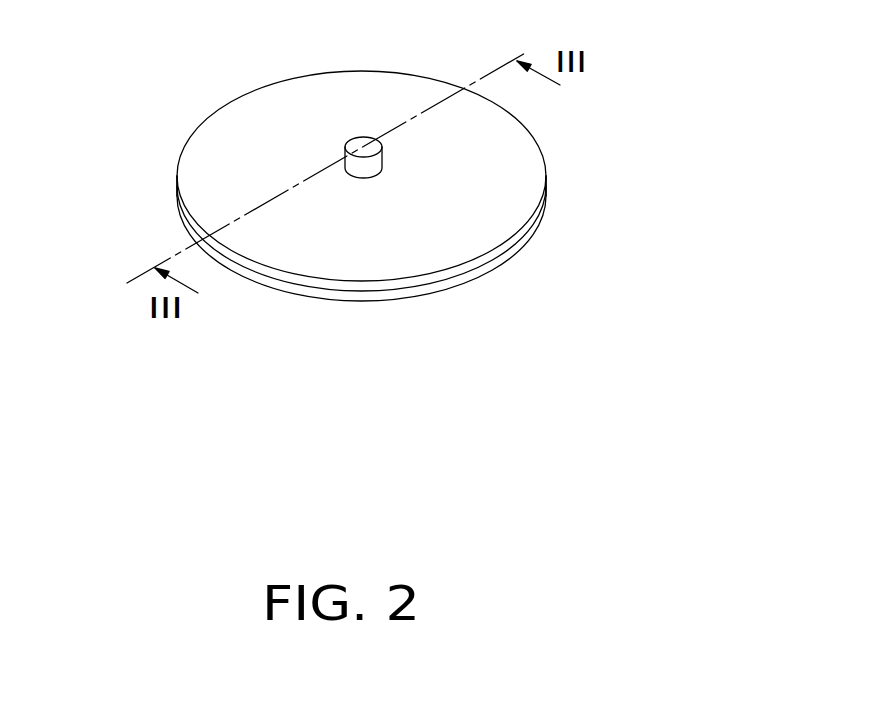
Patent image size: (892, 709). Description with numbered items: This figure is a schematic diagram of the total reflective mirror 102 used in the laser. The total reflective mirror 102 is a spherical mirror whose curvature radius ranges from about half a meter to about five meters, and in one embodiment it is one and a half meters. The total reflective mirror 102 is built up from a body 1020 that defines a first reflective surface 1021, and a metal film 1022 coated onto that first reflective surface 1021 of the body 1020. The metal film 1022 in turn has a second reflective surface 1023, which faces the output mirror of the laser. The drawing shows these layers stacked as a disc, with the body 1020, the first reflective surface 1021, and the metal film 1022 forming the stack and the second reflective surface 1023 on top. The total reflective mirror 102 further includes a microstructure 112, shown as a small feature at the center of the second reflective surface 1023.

The total reflective mirror 102 is at (334, 225).
The body 1020 is at (487, 268).
The first reflective surface 1021 is at (455, 277).
The metal film 1022 is at (413, 282).
The second reflective surface 1023 is at (238, 118).
The microstructure 112 is at (355, 138).